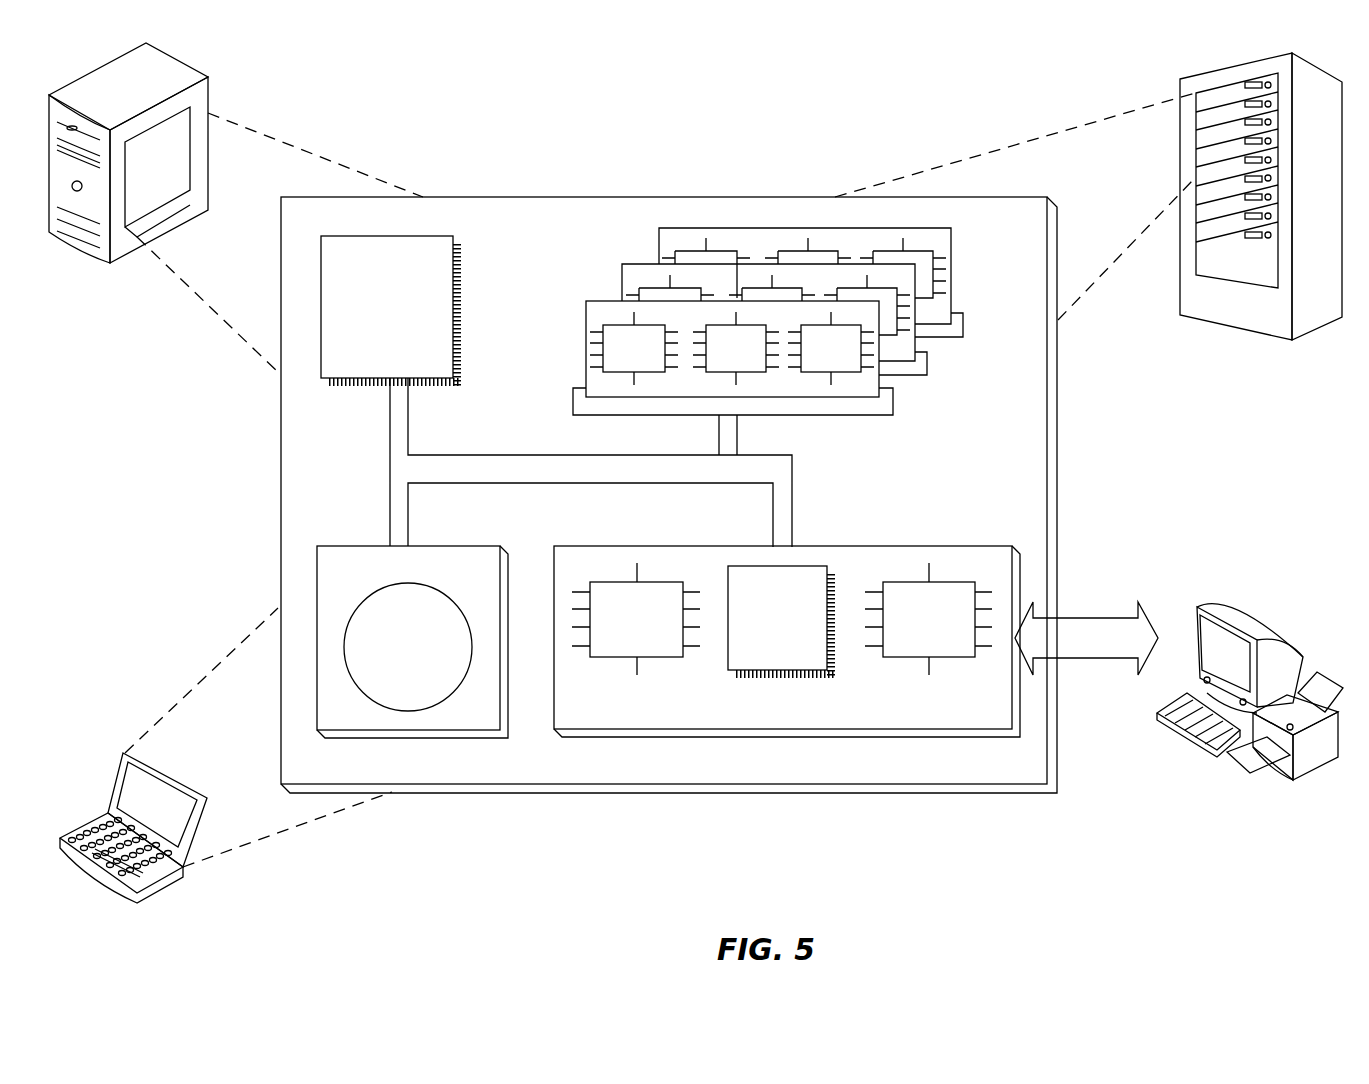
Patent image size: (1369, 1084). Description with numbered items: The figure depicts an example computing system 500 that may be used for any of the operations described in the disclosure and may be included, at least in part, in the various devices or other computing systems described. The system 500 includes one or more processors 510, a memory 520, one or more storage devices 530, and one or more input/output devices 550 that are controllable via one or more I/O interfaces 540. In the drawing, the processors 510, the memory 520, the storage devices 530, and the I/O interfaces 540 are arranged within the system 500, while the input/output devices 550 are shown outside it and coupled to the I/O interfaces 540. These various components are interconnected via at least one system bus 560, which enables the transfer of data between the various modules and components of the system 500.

The computing system 500 is at (479, 110).
The processor 510 is at (443, 369).
The memory 520 is at (961, 379).
The storage device 530 is at (490, 719).
The I/O interface 540 is at (898, 719).
The input/output device 550 is at (1197, 610).
The system bus 560 is at (585, 473).